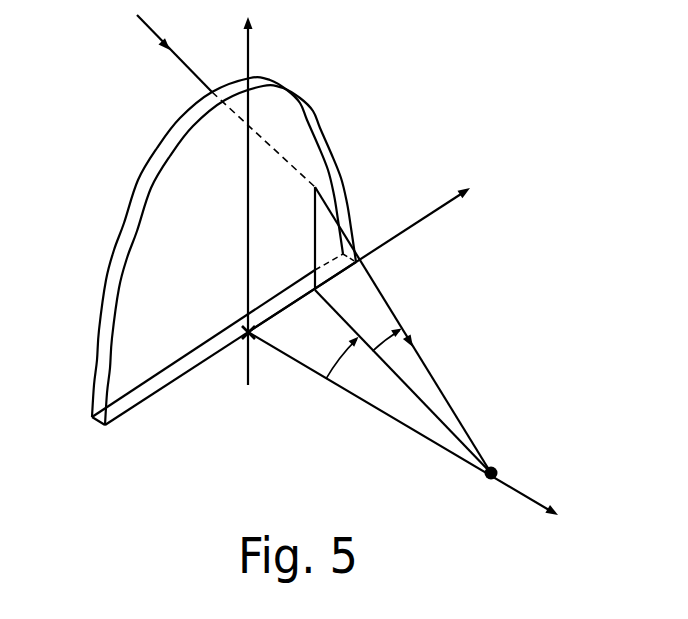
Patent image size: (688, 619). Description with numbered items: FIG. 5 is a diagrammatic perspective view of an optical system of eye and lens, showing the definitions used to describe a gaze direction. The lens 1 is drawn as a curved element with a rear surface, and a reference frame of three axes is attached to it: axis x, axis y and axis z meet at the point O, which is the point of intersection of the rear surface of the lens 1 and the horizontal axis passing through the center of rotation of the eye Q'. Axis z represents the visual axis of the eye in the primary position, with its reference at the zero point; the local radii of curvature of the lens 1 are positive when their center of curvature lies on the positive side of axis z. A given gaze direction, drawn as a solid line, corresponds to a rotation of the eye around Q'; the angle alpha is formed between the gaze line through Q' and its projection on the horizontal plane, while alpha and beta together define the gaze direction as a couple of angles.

The lens 1 is at (119, 217).
The axis X x is at (362, 260).
The axis Y y is at (258, 196).
The axis Z z is at (411, 423).
The point O is at (238, 357).
The center of rotation of the eye Q' is at (505, 461).